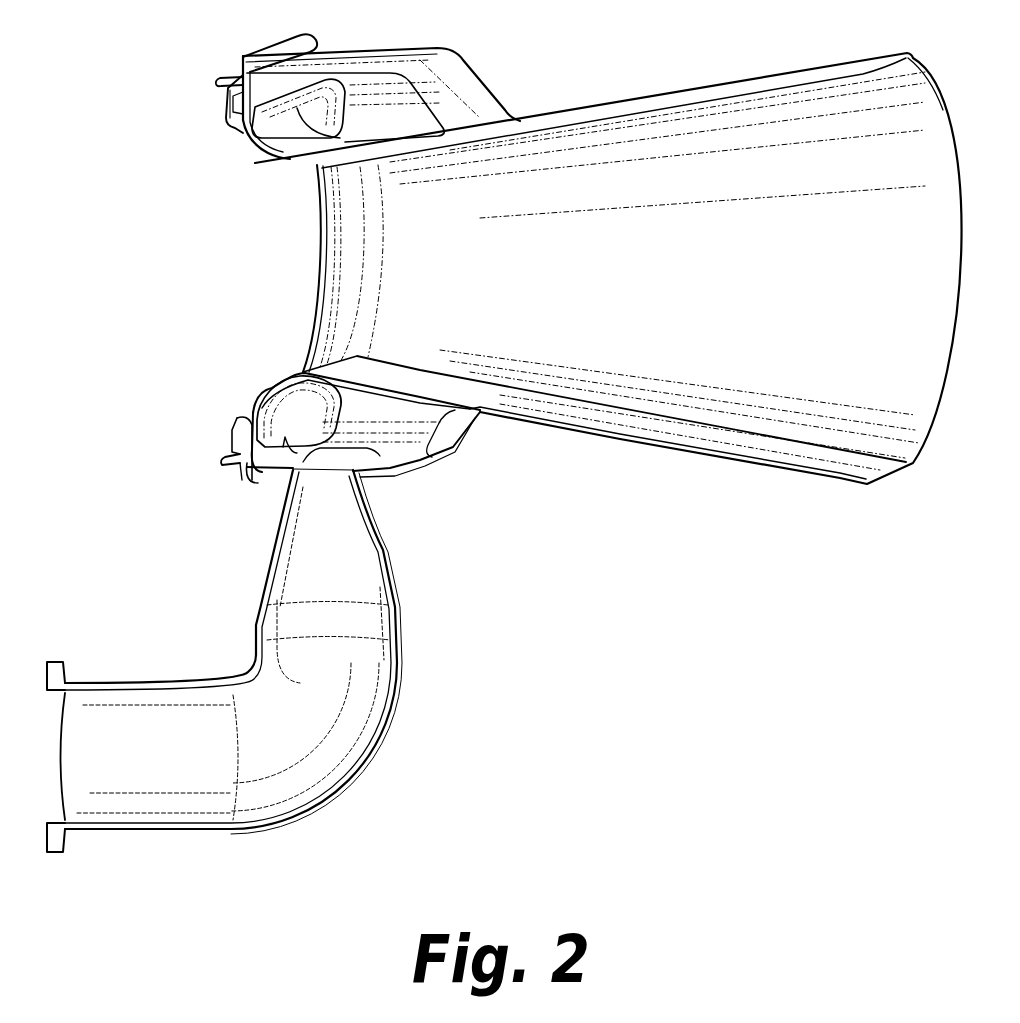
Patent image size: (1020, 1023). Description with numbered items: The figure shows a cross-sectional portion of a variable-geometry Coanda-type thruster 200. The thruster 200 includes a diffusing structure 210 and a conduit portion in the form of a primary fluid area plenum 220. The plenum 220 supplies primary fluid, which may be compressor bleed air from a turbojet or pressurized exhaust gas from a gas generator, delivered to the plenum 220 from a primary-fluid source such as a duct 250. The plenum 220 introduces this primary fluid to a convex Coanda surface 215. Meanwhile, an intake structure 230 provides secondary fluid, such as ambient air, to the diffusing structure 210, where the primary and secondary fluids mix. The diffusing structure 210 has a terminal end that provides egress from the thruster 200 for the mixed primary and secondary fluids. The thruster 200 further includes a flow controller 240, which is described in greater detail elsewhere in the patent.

The Coanda-type thruster 200 is at (504, 429).
The diffusing structure 210 is at (721, 239).
The convex Coanda surface 215 is at (266, 384).
The primary fluid area plenum 220 is at (358, 110).
The intake structure 230 is at (225, 123).
The flow controller 240 is at (218, 80).
The duct 250 is at (178, 753).